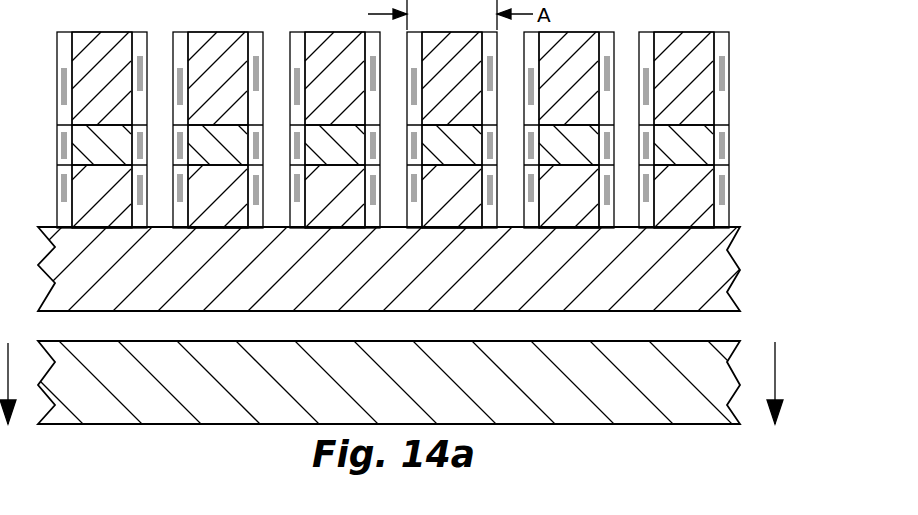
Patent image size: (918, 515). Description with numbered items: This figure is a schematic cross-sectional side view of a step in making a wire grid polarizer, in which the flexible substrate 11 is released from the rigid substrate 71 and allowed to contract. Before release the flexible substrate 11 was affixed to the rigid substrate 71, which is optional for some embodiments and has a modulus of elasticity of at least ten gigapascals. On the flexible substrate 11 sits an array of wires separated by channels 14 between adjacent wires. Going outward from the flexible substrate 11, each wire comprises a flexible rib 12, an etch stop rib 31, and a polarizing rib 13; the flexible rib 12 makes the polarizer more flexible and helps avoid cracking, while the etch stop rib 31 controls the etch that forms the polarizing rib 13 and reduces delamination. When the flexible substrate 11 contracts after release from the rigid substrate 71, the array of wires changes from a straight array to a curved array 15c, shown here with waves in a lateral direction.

The flexible substrate 11 is at (382, 295).
The flexible rib 12 is at (696, 205).
The polarizing rib 13 is at (696, 96).
The etch stop rib 31 is at (696, 160).
The channels 14 is at (639, 131).
The rigid substrate 71 is at (379, 398).
The curved array 15c is at (768, 96).